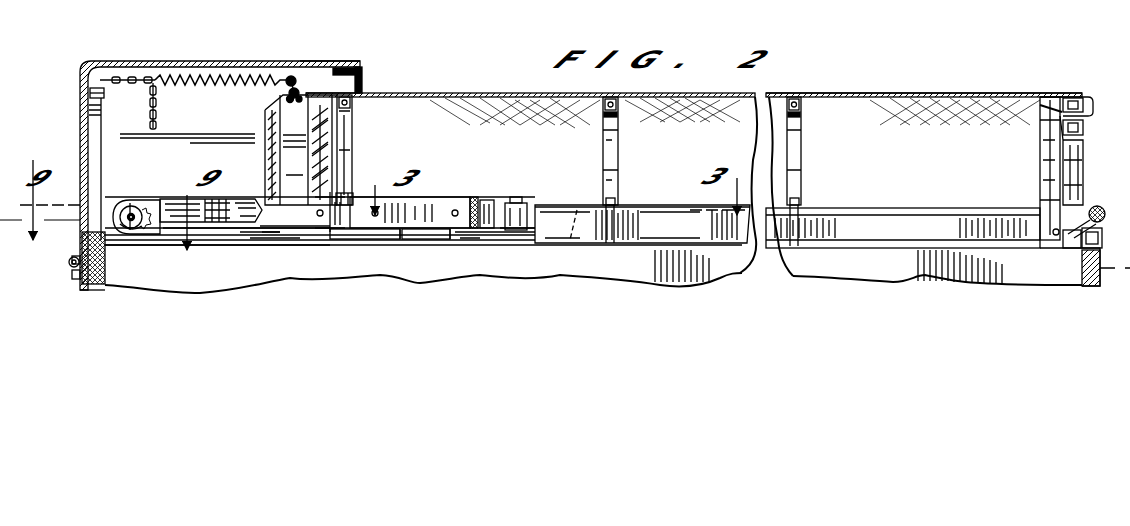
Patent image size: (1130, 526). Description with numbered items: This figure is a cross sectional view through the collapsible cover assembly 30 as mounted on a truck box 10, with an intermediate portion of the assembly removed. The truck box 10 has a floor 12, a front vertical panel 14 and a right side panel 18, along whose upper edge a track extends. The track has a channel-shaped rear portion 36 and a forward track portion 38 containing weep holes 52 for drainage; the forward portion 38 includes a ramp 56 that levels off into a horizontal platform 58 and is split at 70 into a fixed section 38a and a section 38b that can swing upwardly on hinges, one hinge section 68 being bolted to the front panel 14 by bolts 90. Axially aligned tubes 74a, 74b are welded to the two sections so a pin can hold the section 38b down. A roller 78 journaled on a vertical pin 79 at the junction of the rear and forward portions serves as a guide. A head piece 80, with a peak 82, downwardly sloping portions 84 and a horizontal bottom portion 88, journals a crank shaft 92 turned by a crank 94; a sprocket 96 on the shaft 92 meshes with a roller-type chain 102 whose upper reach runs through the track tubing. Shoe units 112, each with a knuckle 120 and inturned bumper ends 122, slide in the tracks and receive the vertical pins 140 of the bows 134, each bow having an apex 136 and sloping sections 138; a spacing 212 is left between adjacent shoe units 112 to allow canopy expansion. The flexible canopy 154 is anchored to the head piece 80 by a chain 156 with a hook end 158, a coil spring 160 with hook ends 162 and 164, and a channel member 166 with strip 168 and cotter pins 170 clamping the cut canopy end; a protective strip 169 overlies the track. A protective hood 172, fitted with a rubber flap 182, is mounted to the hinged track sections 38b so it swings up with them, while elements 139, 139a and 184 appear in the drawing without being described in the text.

The truck box 10 is at (942, 289).
The floor 12 is at (1018, 14).
The front vertical panel 14 is at (95, 292).
The right side panel 18 is at (285, 284).
The collapsible cover assembly 30 is at (952, 88).
The rear portion of track 36 is at (900, 208).
The forward track portion 38 is at (350, 252).
The fixed track section 38a is at (485, 245).
The hinged track section 38b is at (248, 245).
The weep holes 52 is at (448, 6).
The ramp 56 is at (560, 222).
The horizontal platform 58 is at (212, 220).
The hinge section 68 is at (75, 282).
The split 70 is at (426, 196).
The tube 74a is at (440, 240).
The tube 74b is at (415, 240).
The roller 78 is at (520, 228).
The vertical pin 79 is at (517, 198).
The head piece 80 is at (108, 150).
The peak or apex 82 is at (90, 94).
The downwardly sloping portions 84 is at (92, 124).
The horizontal bottom portion 88 is at (72, 230).
The bolts 90 is at (72, 266).
The crank shaft 92 is at (130, 206).
The crank 94 is at (25, 0).
The sprocket 96 is at (147, 212).
The roller-type chain 102 is at (158, 238).
The shoe unit 112 is at (312, 54).
The knuckle 120 is at (335, 222).
The inturned ends 122 is at (480, 198).
The bow 134 is at (805, 148).
The peak or apex 136 is at (603, 112).
The downwardly sloping sections 138 is at (356, 190).
The brace 139 is at (625, 153).
The end brace 139a is at (1040, 152).
The vertical pin 140 is at (620, 200).
The flexible canopy 154 is at (468, 92).
The chain 156 is at (158, 108).
The hook end 158 is at (106, 61).
The coil spring 160 is at (230, 88).
The hook end 162 is at (170, 78).
The hook end 164 is at (270, 68).
The channel member 166 is at (304, 137).
The strip 168 is at (300, 92).
The protective strip 169 is at (569, 8).
The cotter pin 170 is at (290, 76).
The protective hood 172 is at (338, 60).
The rubber flap 182 is at (362, 78).
The latch housing 184 is at (1066, 151).
The spacing 212 is at (473, 232).